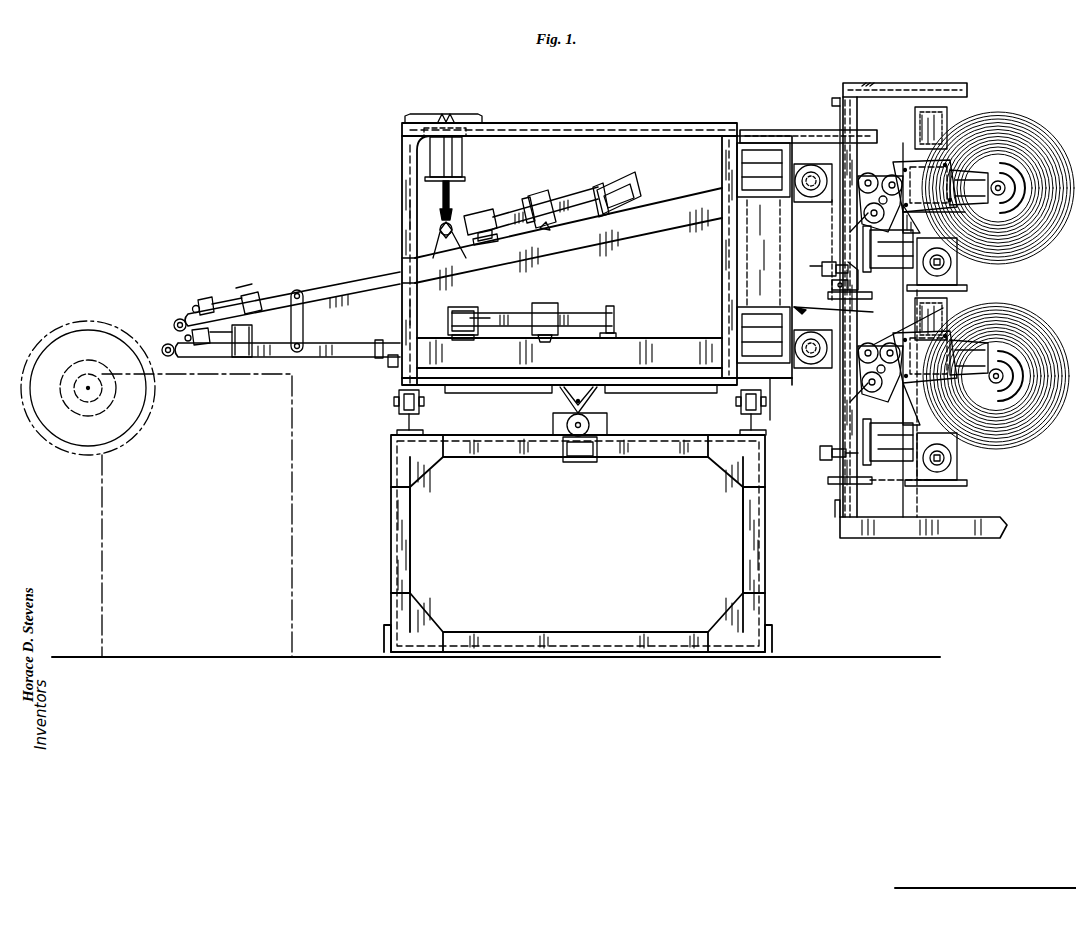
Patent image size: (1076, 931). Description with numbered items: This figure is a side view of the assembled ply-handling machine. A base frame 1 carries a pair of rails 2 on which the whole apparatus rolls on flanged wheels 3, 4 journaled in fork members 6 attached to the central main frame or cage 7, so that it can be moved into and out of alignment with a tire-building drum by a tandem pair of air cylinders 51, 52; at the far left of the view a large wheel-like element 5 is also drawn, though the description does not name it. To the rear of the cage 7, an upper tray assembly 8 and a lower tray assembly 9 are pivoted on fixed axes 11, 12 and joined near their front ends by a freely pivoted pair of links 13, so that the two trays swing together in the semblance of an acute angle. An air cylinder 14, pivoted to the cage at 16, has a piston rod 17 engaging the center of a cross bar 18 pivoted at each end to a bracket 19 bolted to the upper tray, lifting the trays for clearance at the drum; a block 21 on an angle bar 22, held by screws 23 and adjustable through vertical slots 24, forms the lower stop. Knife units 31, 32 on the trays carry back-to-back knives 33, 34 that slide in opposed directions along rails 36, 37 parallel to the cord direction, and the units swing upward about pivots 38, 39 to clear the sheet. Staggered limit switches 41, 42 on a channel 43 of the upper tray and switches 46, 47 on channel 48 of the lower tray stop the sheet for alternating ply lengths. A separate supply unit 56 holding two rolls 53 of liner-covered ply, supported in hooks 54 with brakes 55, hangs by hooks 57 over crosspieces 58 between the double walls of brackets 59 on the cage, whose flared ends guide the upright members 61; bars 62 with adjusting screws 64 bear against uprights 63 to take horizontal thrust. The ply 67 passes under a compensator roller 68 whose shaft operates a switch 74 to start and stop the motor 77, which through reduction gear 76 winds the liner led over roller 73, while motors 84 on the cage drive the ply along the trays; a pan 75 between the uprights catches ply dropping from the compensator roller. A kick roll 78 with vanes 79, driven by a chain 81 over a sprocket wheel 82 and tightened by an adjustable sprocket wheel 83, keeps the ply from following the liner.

The base frame 1 is at (778, 562).
The rails 2 is at (400, 428).
The flanged wheel 3 is at (415, 406).
The flanged wheel 4 is at (742, 414).
The wheel 5 is at (26, 416).
The fork members 6 is at (422, 392).
The main frame or cage 7 is at (655, 112).
The upper tray assembly 8 is at (672, 190).
The lower tray assembly 9 is at (672, 330).
The pivot axis 11 is at (812, 178).
The pivot axis 12 is at (814, 360).
The links 13 is at (305, 316).
The air cylinder 14 is at (462, 158).
The cylinder pivot 16 is at (455, 116).
The piston rod 17 is at (450, 202).
The cross bar 18 is at (452, 228).
The bracket 19 is at (440, 254).
The block 21 is at (372, 358).
The angle bar 22 is at (395, 318).
The screws 23 is at (360, 366).
The vertical slots 24 is at (380, 350).
The knife unit 31 is at (574, 178).
The knife unit 32 is at (571, 312).
The knives 33 is at (553, 226).
The knives 34 is at (546, 340).
The rail 36 is at (585, 182).
The rail 37 is at (516, 312).
The pivot 38 is at (545, 208).
The pivot 39 is at (503, 322).
The limit switch 41 is at (212, 292).
The limit switch 42 is at (194, 300).
The channel 43 is at (258, 284).
The limit switch 46 is at (200, 346).
The limit switch 47 is at (175, 340).
The channel 48 is at (252, 330).
The air cylinder 51 is at (595, 398).
The air cylinder 52 is at (602, 414).
The supply roll 53 is at (1035, 130).
The hooks 54 is at (1040, 120).
The brakes 55 is at (1000, 210).
The supply unit 56 is at (876, 78).
The hooks 57 is at (836, 103).
The crosspieces 58 is at (858, 128).
The brackets 59 is at (800, 130).
The upright members 61 is at (862, 178).
The bars 62 is at (826, 300).
The uprights 63 is at (832, 235).
The adjusting screws 64 is at (800, 310).
The ply 67 is at (846, 250).
The compensator roller 68 is at (860, 272).
The roller 73 is at (912, 226).
The switch 74 is at (832, 272).
The pan 75 is at (868, 312).
The reduction gear 76 is at (950, 283).
The motor 77 is at (888, 345).
The kick roll 78 is at (860, 228).
The vanes 79 is at (918, 186).
The chain 81 is at (880, 176).
The sprocket wheel 82 is at (893, 175).
The adjustable sprocket wheel 83 is at (878, 205).
The motor 84 is at (762, 148).